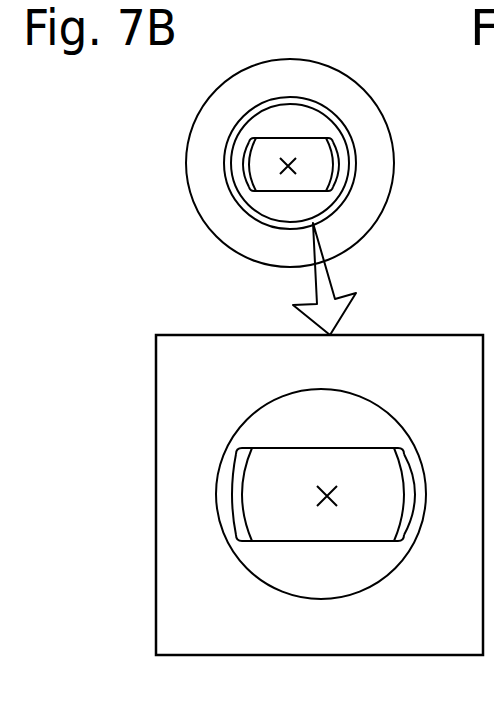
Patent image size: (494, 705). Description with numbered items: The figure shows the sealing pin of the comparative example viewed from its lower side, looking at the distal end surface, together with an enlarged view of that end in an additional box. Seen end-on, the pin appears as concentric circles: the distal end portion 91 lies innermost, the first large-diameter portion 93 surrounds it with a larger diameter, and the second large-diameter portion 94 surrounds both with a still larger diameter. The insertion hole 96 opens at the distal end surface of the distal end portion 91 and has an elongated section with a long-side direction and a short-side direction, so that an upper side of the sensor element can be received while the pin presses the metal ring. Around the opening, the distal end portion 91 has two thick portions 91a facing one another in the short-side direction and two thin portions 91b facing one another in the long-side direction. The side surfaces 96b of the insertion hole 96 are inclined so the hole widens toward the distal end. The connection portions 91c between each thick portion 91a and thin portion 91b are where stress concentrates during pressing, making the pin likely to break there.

The distal end portion 91 is at (310, 118).
The thick portion 91a is at (290, 120).
The thin portion 91b is at (347, 147).
The connection portion 91c is at (235, 442).
The first large-diameter portion 93 is at (232, 143).
The second large-diameter portion 94 is at (200, 143).
The insertion hole 96 is at (288, 170).
The side surface 96b is at (240, 167).